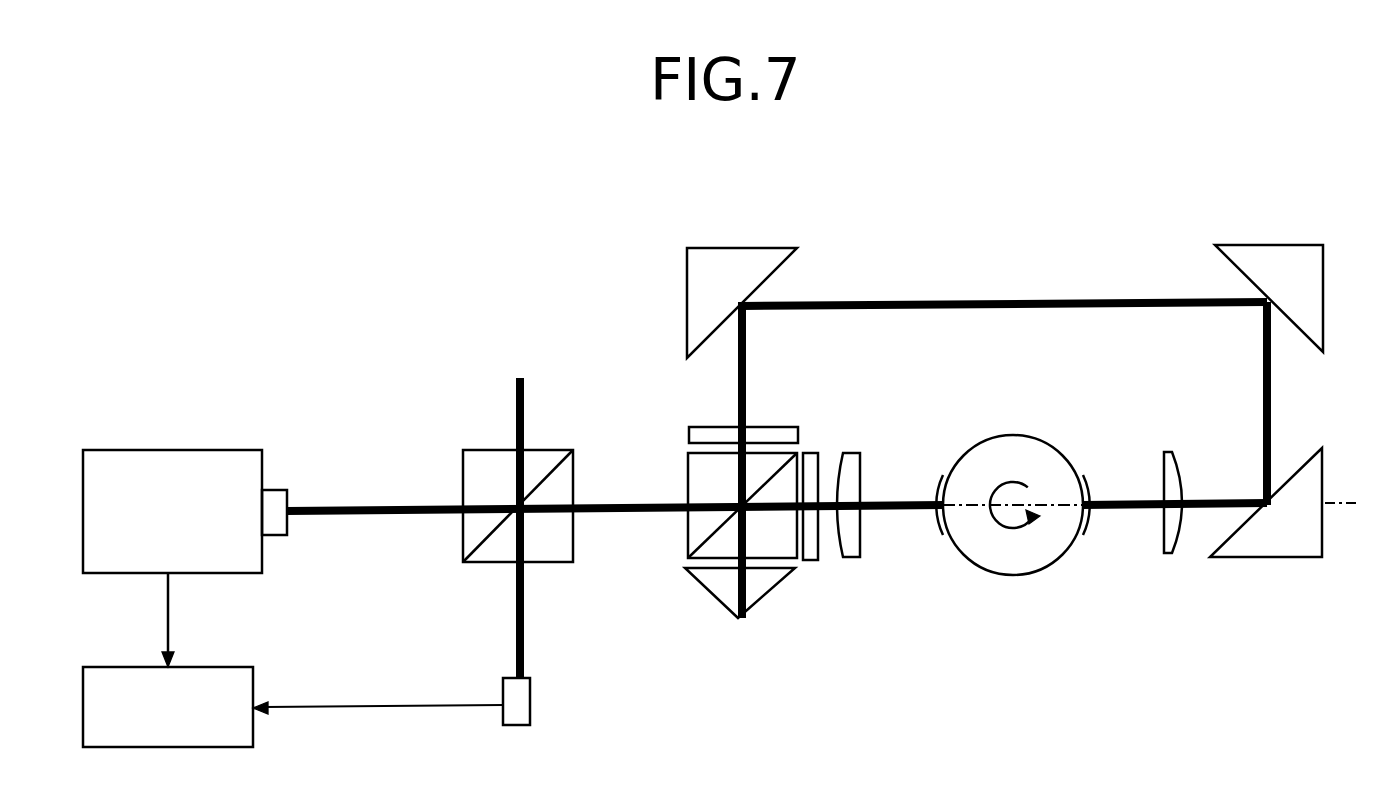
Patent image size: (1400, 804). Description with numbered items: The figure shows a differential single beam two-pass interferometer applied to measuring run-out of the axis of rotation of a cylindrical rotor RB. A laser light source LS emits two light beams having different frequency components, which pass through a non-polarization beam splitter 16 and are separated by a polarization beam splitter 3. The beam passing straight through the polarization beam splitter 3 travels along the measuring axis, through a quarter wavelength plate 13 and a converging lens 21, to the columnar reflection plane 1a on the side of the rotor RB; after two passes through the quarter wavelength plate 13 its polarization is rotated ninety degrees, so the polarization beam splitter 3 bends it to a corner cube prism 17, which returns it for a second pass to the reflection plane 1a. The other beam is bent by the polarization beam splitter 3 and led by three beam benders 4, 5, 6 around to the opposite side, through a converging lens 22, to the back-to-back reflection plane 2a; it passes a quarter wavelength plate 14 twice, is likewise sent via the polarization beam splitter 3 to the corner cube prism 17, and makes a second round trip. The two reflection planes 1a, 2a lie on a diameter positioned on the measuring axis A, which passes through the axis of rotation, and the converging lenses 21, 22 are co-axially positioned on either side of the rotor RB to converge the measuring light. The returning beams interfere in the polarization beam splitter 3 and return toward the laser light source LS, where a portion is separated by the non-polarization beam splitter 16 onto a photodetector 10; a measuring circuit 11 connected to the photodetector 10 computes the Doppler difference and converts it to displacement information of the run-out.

The laser light source LS is at (233, 458).
The measuring circuit 11 is at (225, 667).
The non-polarization beam splitter 16 is at (477, 457).
The photodetector 10 is at (521, 705).
The beam bender 4 is at (730, 292).
The quarter wavelength plate 14 is at (690, 433).
The polarization beam splitter 3 is at (690, 547).
The corner cube prism 17 is at (755, 593).
The quarter wavelength plate 13 is at (812, 563).
The converging lens 21 is at (852, 455).
The cylindrical rotor RB is at (1048, 551).
The columnar reflection plane 1a is at (943, 504).
The columnar reflection plane 2a is at (1083, 504).
The converging lens 22 is at (1172, 457).
The beam bender 5 is at (1300, 290).
The beam bender 6 is at (1297, 541).
The optical axis A is at (1354, 503).